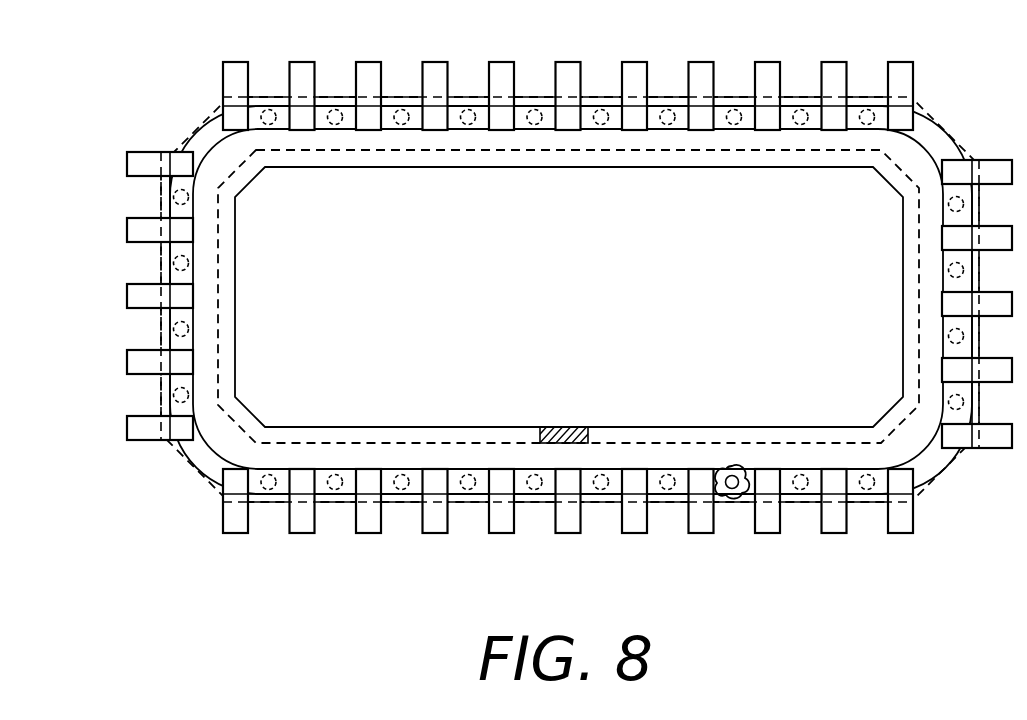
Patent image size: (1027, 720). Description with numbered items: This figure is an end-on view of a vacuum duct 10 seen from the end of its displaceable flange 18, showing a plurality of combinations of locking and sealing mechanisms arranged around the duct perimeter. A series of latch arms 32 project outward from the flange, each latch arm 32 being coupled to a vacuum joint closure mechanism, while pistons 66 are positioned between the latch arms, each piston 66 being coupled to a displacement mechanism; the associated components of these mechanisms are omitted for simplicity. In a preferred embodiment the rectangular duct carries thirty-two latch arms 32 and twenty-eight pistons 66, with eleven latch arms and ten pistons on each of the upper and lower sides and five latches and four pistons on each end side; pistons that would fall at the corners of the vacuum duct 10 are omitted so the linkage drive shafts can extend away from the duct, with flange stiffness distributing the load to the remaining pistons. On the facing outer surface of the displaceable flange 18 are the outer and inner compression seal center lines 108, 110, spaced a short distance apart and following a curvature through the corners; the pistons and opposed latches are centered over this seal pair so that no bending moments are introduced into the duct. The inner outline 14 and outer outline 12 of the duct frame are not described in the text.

The vacuum duct 10 is at (951, 131).
The outer ring 12 is at (213, 118).
The inner plate 14 is at (244, 188).
The displaceable flange 18 is at (205, 150).
The latch arms 32 is at (632, 63).
The pistons 66 is at (467, 110).
The outer compression seal center line 108 is at (172, 190).
The inner compression seal center line 110 is at (172, 248).